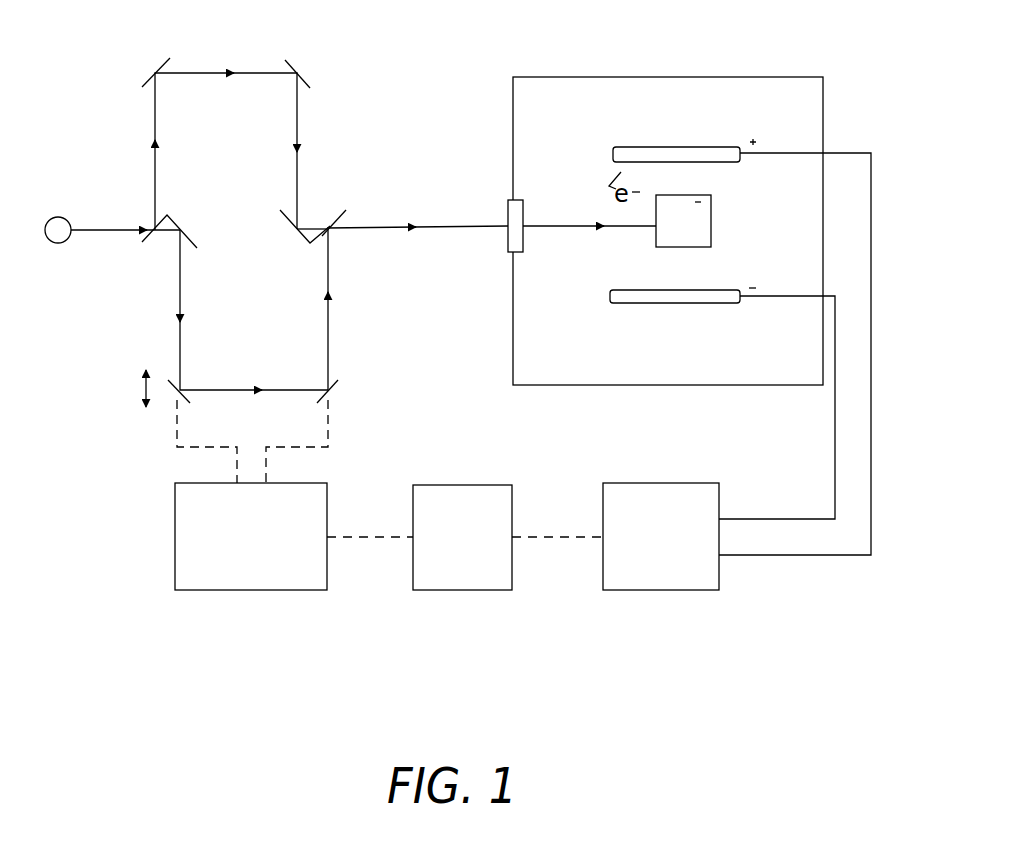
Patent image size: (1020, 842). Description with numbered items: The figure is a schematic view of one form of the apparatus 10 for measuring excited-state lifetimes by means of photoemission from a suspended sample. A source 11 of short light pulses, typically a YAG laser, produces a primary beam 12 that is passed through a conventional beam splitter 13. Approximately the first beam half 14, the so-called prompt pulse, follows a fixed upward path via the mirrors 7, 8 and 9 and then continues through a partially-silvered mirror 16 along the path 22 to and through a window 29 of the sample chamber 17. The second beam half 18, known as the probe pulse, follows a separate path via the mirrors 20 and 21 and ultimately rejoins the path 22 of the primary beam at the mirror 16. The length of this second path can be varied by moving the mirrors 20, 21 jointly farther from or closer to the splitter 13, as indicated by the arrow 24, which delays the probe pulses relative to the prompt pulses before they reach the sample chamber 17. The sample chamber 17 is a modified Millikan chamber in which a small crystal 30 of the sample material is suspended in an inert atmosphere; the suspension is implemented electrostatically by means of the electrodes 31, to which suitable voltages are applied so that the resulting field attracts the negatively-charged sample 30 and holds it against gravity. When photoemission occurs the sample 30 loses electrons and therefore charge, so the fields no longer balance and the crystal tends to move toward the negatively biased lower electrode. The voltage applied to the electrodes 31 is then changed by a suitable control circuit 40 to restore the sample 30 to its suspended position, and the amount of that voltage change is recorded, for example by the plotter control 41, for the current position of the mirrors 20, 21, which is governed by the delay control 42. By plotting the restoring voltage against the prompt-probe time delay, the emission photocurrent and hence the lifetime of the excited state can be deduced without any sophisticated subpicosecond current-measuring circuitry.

The mirror 7 is at (143, 76).
The mirror 8 is at (302, 75).
The mirror 9 is at (293, 210).
The apparatus 10 is at (386, 80).
The source of short light pulses 11 is at (55, 217).
The primary beam 12 is at (107, 232).
The beam splitter 13 is at (171, 213).
The first beam half 14 is at (153, 132).
The partially-silvered mirror 16 is at (332, 215).
The sample chamber 17 is at (549, 83).
The second beam half 18 is at (182, 290).
The mirror 20 is at (168, 383).
The mirror 21 is at (335, 382).
The path 22 is at (418, 185).
The arrow 24 is at (143, 385).
The window 29 is at (523, 200).
The small crystal 30 is at (711, 230).
The electrode 31 is at (647, 127).
The control circuit 40 is at (712, 493).
The control 41 is at (507, 490).
The control 42 is at (317, 492).